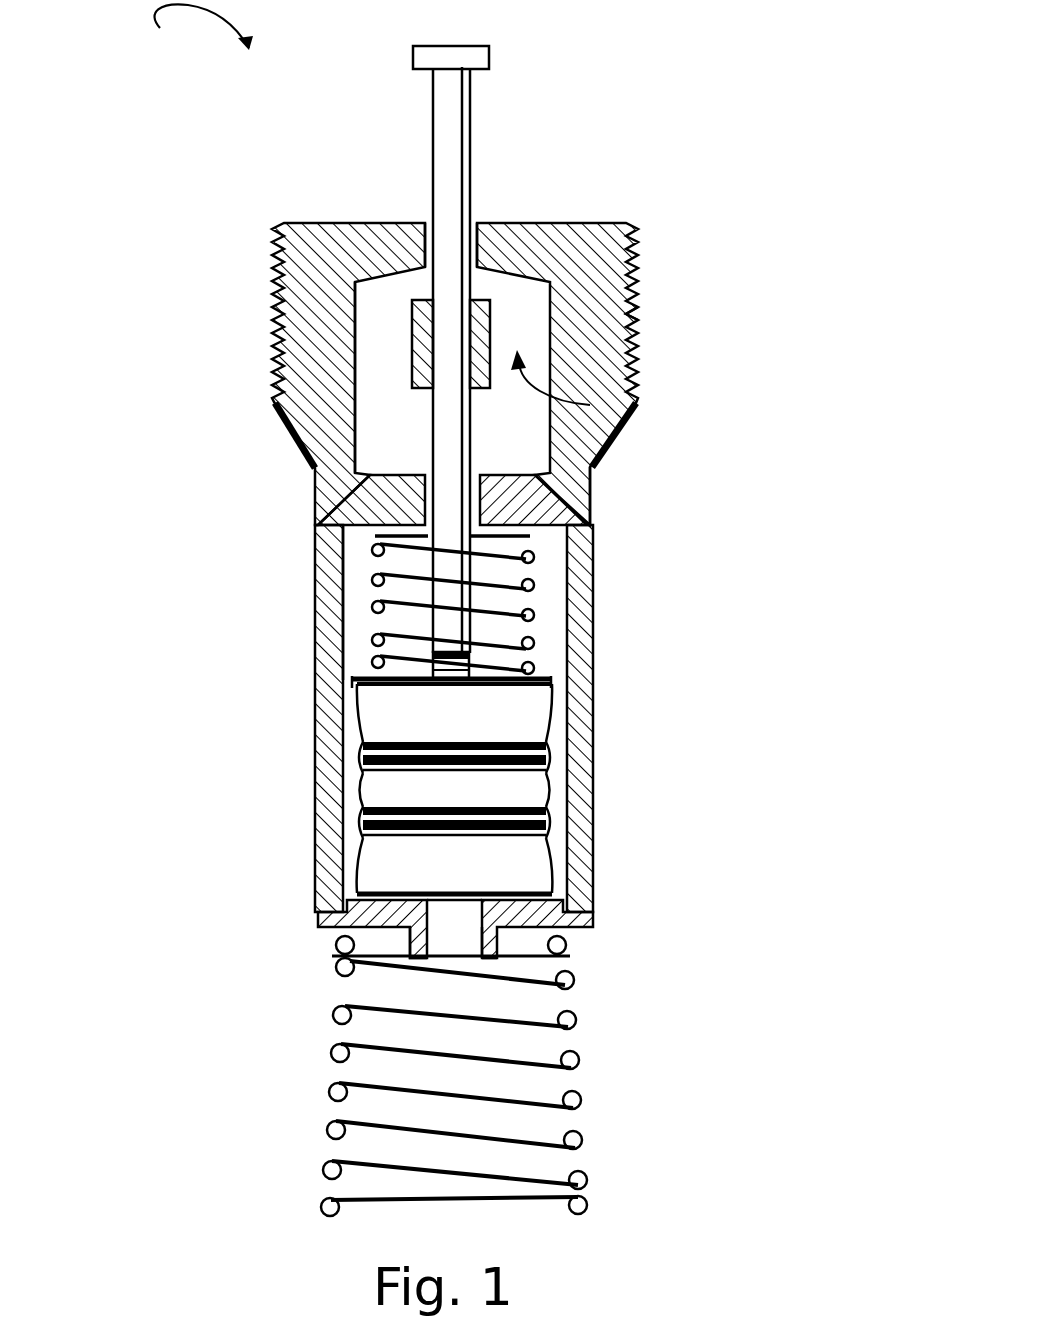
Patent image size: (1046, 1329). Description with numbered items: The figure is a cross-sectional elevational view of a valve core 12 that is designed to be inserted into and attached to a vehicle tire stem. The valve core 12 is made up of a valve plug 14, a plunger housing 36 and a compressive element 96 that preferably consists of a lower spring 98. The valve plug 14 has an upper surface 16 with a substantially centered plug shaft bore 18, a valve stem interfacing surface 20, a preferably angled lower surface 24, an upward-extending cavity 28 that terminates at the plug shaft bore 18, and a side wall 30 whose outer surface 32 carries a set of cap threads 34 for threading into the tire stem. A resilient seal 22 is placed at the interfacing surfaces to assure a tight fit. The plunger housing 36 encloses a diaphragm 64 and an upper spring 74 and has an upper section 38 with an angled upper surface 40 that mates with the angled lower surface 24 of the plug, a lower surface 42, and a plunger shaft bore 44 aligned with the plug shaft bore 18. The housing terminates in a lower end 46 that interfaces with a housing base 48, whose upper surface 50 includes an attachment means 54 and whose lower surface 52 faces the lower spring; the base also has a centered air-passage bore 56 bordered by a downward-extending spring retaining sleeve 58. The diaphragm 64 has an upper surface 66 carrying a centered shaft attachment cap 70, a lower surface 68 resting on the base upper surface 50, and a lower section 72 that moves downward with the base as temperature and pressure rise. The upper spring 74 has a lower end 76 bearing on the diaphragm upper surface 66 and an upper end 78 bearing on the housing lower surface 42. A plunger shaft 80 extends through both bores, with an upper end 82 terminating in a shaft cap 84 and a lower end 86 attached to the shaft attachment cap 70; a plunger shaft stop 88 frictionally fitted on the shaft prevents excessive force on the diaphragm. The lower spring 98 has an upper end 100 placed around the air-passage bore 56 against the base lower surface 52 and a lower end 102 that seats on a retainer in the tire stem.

The valve core 12 is at (204, 29).
The valve plug 14 is at (270, 297).
The upper surface 16 is at (635, 353).
The plug shaft bore 18 is at (477, 222).
The valve stem interfacing surface 20 is at (272, 419).
The resilient seal 22 is at (294, 453).
The lower surface 24 is at (332, 518).
The upward-extending cavity 28 is at (590, 405).
The side wall 30 is at (587, 320).
The outer surface 32 is at (635, 374).
The cap threads 34 is at (640, 353).
The plunger housing 36 is at (531, 688).
The upper section 38 is at (627, 432).
The upper surface 40 is at (593, 480).
The lower surface 42 is at (593, 552).
The plunger shaft bore 44 is at (428, 475).
The lower end 46 is at (453, 929).
The housing base 48 is at (412, 905).
The upper surface 50 is at (553, 887).
The lower surface 52 is at (337, 968).
The attachment means 54 is at (593, 920).
The air-passage bore 56 is at (563, 915).
The spring retaining sleeve 58 is at (513, 960).
The diaphragm 64 is at (455, 789).
The upper surface 66 is at (400, 684).
The lower surface 68 is at (413, 905).
The shaft attachment cap 70 is at (443, 692).
The lower section 72 is at (392, 857).
The upper spring 74 is at (456, 605).
The lower end 76 is at (537, 662).
The upper end 78 is at (536, 556).
The plunger shaft 80 is at (452, 360).
The upper end 82 is at (433, 70).
The shaft cap 84 is at (490, 52).
The lower end 86 is at (433, 660).
The plunger shaft stop 88 is at (485, 320).
The compressive element 96 is at (483, 1060).
The lower spring 98 is at (483, 1060).
The upper end 100 is at (570, 942).
The lower end 102 is at (586, 1208).